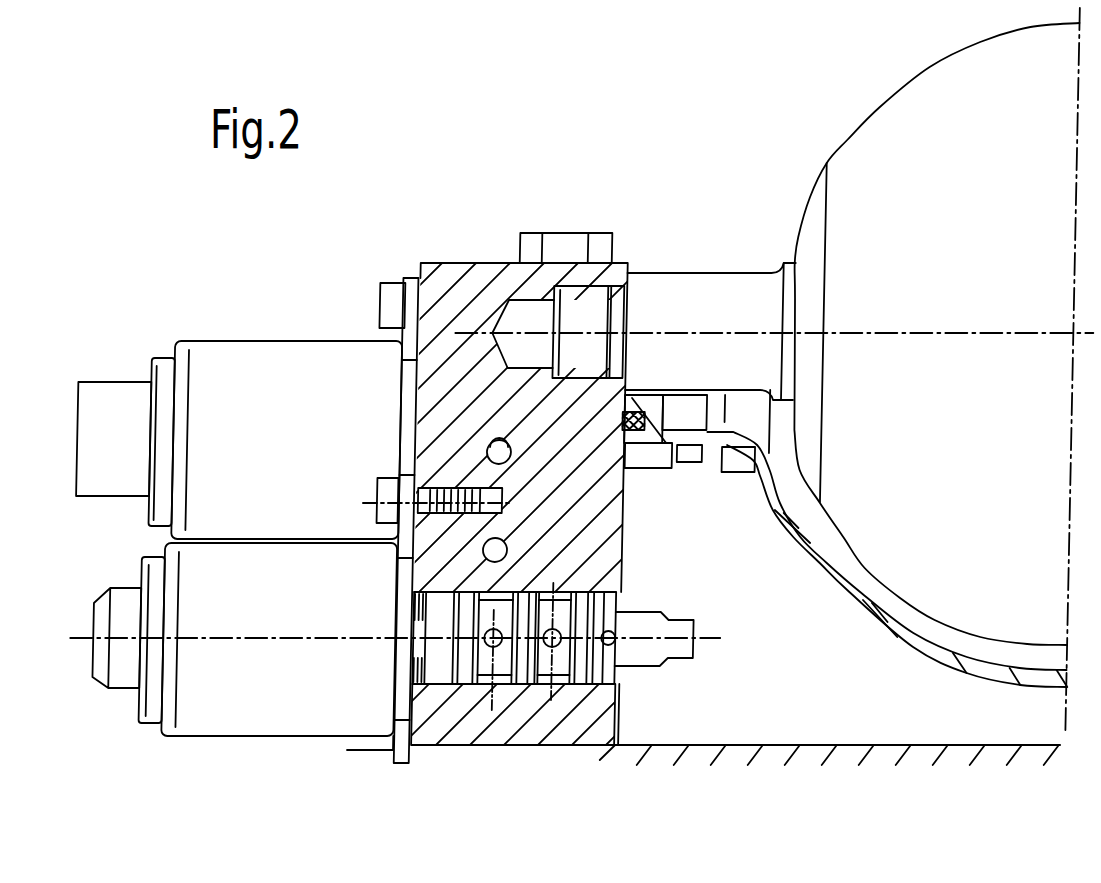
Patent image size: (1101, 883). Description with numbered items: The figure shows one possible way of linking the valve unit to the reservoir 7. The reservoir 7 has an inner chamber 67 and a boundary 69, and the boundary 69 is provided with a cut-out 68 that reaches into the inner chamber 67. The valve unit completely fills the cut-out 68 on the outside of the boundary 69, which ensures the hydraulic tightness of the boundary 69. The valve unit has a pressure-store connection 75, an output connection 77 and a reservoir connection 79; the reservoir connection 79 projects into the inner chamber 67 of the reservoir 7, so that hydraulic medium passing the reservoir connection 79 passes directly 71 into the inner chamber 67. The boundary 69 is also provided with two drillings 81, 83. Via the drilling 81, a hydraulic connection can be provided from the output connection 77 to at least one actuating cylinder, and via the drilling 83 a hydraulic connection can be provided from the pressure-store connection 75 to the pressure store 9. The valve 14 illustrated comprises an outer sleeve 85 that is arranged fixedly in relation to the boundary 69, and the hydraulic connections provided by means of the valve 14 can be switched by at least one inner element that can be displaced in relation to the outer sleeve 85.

The reservoir 7 is at (668, 752).
The pressure store 9 is at (870, 158).
The valve 14 is at (247, 712).
The inner chamber 67 is at (801, 710).
The cut-out 68 is at (476, 690).
The boundary 69 is at (527, 720).
The direct passage 71 is at (596, 684).
The pressure-store connection 75 is at (506, 632).
The output connection 77 is at (565, 633).
The reservoir connection 79 is at (621, 633).
The drilling 81 is at (506, 456).
The drilling 83 is at (504, 546).
The outer sleeve 85 is at (557, 685).